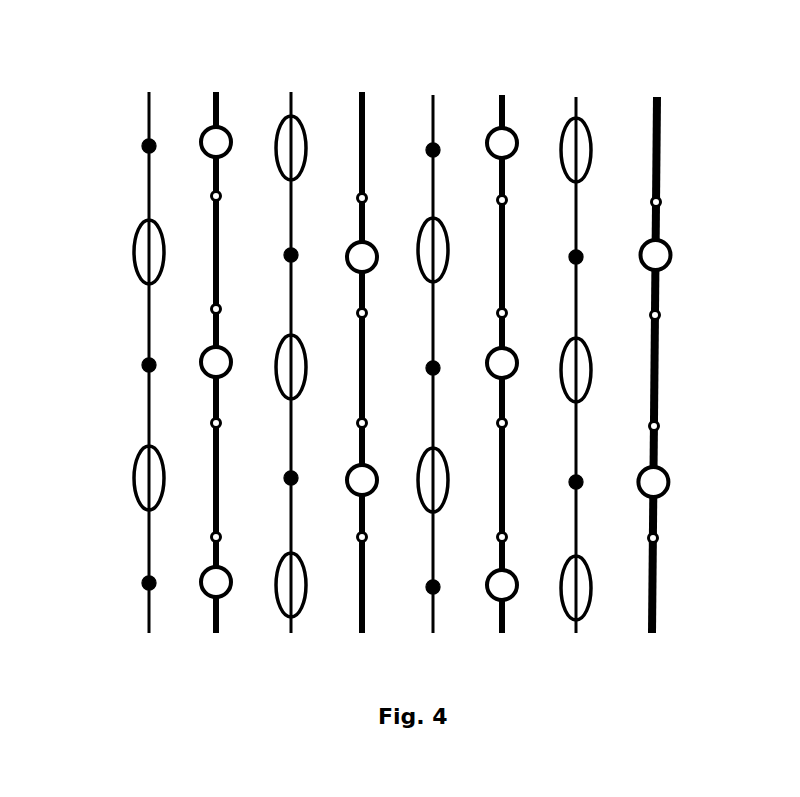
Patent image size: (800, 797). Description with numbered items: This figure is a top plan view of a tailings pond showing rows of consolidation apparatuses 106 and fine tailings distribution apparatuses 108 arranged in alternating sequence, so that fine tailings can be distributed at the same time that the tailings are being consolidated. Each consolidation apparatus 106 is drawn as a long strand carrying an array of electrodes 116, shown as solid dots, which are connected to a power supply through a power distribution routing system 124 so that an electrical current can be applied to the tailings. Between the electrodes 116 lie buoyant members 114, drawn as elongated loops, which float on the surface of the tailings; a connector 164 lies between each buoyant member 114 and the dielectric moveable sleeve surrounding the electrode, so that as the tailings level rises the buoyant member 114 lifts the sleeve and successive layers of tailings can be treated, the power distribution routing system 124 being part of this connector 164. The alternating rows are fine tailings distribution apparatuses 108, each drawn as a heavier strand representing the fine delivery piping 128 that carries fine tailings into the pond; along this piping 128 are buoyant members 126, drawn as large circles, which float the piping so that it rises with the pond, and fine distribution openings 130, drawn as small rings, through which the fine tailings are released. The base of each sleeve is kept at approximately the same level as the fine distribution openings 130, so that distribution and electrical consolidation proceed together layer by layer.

The consolidation apparatus 106 is at (290, 625).
The fine tailings distribution apparatus 108 is at (210, 618).
The buoyant member 114 is at (136, 268).
The electrodes 116 is at (145, 152).
The power distribution routing system 124 is at (148, 112).
The buoyant member 126 is at (665, 242).
The fine delivery piping 128 is at (662, 108).
The fine distribution openings 130 is at (662, 197).
The connector 164 is at (430, 195).